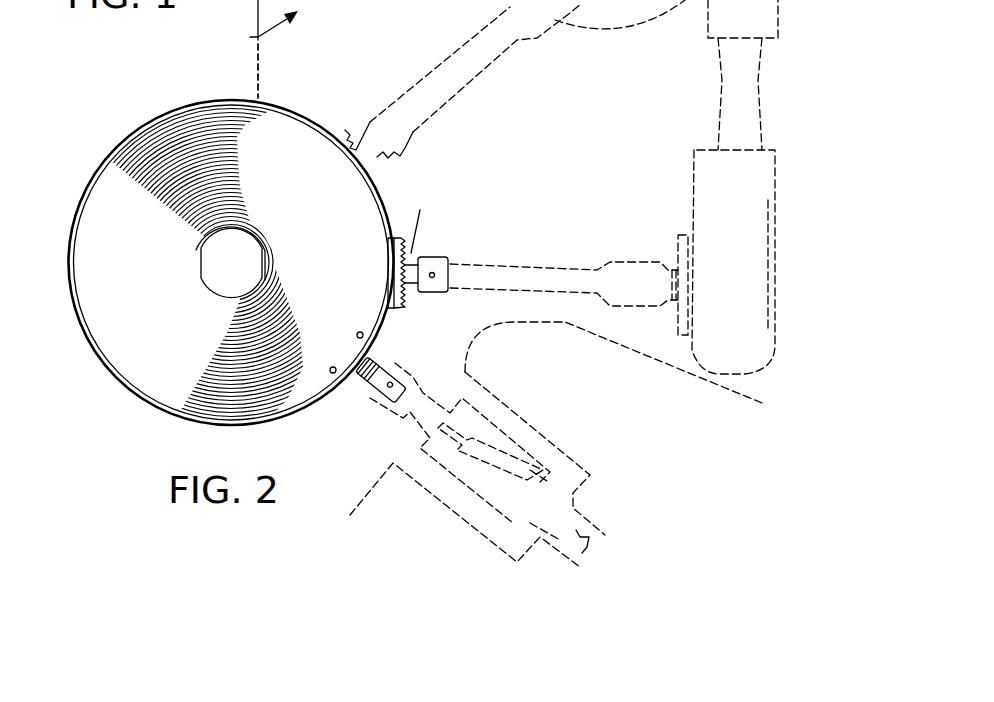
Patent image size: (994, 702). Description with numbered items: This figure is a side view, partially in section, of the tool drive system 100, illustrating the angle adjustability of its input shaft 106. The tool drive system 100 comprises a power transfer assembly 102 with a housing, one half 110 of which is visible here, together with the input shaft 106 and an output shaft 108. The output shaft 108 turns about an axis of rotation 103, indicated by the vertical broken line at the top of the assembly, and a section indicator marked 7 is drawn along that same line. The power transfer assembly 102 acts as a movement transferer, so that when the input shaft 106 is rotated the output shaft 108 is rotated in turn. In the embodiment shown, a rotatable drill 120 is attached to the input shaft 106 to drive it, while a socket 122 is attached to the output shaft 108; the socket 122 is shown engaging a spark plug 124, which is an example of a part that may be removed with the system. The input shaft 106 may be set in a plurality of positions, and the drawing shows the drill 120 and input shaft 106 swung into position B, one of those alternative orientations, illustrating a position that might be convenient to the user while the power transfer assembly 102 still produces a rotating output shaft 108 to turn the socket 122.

The tool drive system 100 is at (216, 277).
The power transfer assembly 102 is at (107, 375).
The axis of rotation 103 is at (260, 67).
The input shaft 106 is at (378, 184).
The output shaft 108 is at (368, 355).
The half 110 is at (298, 11).
The rotatable drill 120 is at (632, 27).
The socket 122 is at (422, 446).
The spark plug 124 is at (577, 510).
The section line for FIG. 7 is at (261, 49).
The position B is at (692, 167).